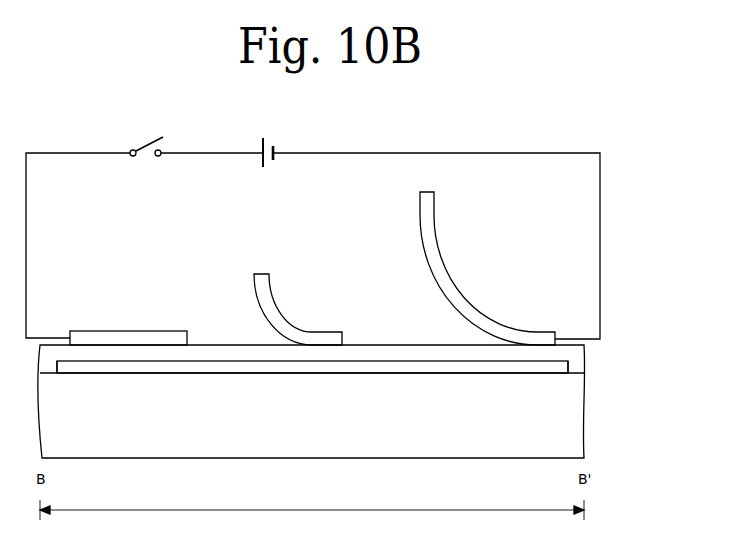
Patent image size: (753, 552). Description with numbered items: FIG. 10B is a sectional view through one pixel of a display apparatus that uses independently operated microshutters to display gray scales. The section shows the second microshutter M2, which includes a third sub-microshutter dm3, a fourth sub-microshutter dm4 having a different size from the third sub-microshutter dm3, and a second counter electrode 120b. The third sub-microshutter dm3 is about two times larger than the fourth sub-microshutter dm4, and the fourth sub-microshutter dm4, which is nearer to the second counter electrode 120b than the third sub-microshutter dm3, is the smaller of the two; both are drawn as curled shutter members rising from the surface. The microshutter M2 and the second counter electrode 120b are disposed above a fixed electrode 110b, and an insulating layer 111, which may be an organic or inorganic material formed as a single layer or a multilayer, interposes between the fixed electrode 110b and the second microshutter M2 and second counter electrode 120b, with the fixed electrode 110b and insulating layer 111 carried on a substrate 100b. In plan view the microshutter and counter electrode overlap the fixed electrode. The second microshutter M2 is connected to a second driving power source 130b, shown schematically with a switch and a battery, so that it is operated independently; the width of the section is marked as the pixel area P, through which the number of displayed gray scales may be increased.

The substrate 100b is at (577, 427).
The insulating layer 110b is at (568, 368).
The insulating layer 111 is at (577, 352).
The second counter electrode 120b is at (125, 340).
The second driving power source 130b is at (600, 217).
The third sub-microshutter dm3 is at (427, 232).
The fourth sub-microshutter dm4 is at (262, 274).
The second microshutter M2 is at (383, 211).
The pixel area P is at (312, 516).